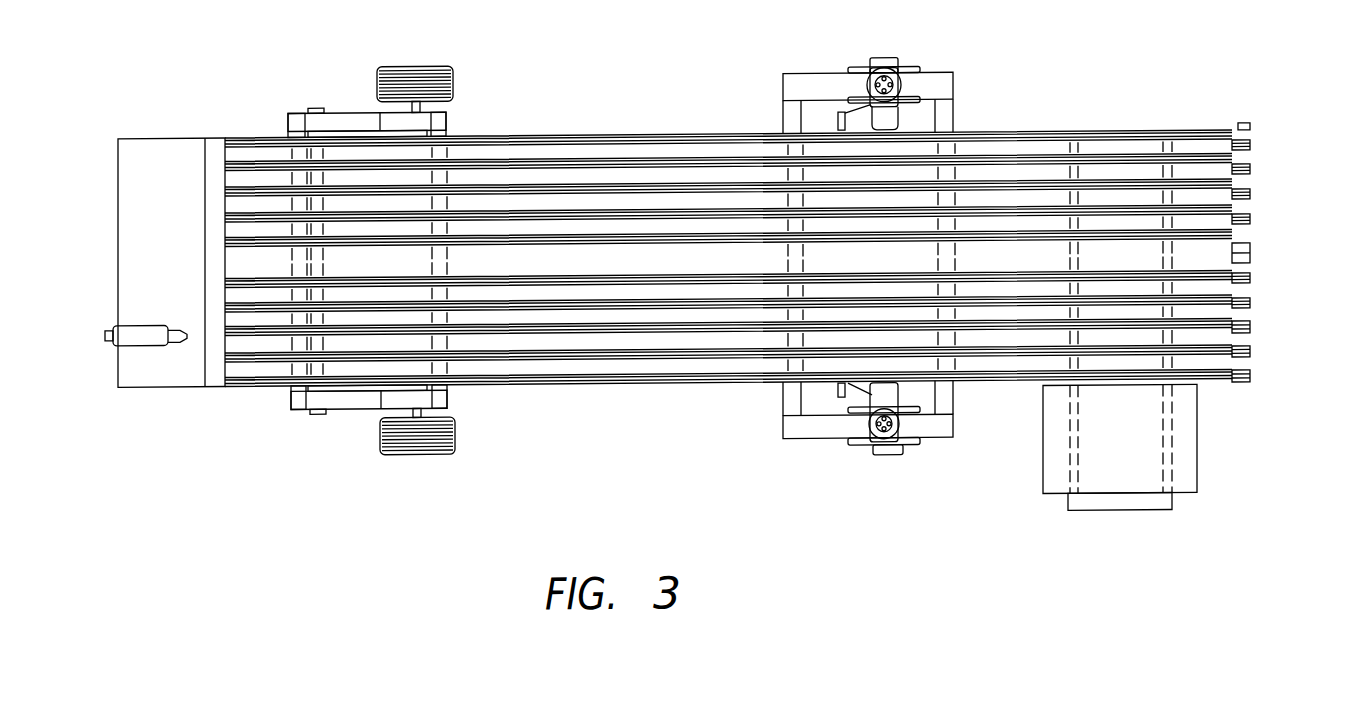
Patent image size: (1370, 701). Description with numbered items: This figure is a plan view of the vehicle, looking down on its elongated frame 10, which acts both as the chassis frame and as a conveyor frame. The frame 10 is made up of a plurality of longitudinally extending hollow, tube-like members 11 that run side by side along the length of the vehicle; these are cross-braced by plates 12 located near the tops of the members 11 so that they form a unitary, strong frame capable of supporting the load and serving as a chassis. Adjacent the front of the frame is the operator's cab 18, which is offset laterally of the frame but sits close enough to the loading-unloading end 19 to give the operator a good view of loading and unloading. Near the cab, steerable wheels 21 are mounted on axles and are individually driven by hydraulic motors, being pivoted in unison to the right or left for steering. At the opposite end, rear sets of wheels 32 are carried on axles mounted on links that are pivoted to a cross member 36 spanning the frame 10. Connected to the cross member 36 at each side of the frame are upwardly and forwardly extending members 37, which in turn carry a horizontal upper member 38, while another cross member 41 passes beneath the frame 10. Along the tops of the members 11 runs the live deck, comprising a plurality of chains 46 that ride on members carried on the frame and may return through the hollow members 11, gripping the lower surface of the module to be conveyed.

The elongated frame 10 is at (625, 136).
The hollow tube-like members 11 is at (1140, 159).
The plates 12 is at (1020, 154).
The operator's cab 18 is at (1190, 458).
The loading-unloading end 19 is at (1258, 261).
The steerable wheels 21 is at (906, 75).
The rear sets of wheels 32 is at (420, 70).
The cross member 36 is at (293, 134).
The upwardly and forwardly extending members 37 is at (335, 123).
The horizontal upper member 38 is at (443, 122).
The cross member 41 is at (447, 137).
The chains 46 is at (1252, 188).